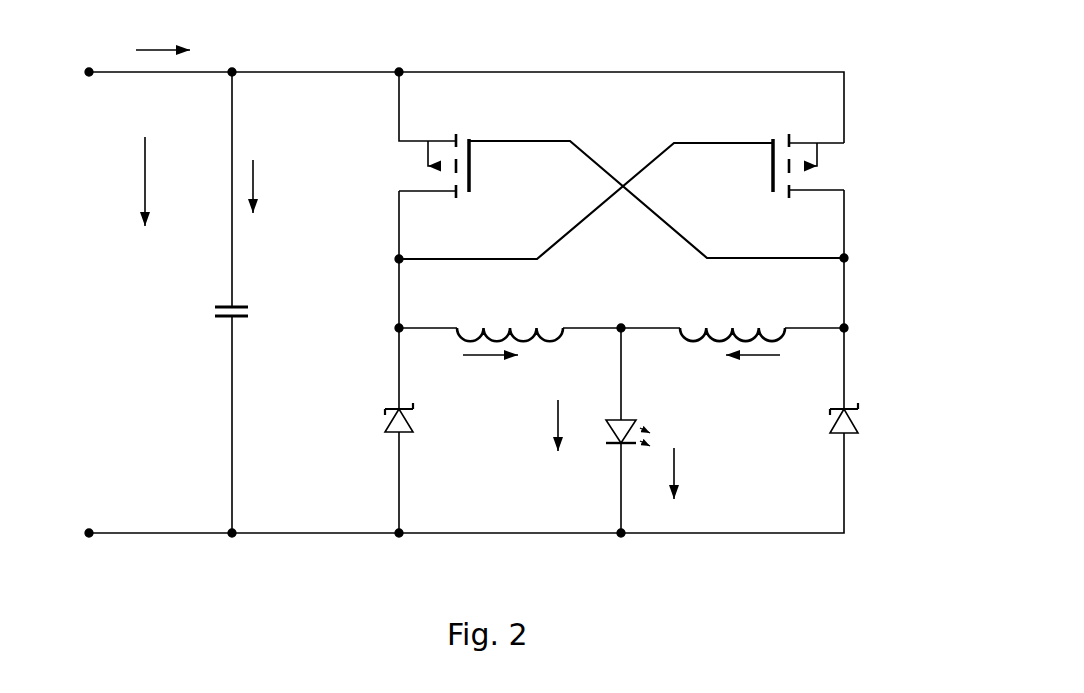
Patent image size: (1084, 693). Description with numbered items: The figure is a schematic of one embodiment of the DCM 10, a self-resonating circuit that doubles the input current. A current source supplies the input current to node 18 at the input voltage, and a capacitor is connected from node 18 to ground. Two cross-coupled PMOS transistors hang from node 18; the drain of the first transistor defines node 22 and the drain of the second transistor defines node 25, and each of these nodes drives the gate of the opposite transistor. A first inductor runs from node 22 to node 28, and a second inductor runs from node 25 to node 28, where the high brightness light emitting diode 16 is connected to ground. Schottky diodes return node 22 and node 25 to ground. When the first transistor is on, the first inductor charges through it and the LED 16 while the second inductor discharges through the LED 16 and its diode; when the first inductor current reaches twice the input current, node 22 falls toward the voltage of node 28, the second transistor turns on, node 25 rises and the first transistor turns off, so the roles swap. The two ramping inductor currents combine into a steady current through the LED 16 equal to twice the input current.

The DCM 10 is at (745, 44).
The node 18 is at (235, 75).
The node 22 is at (397, 327).
The node 28 is at (622, 326).
The node 25 is at (846, 328).
The light emitting diode 16 is at (626, 419).